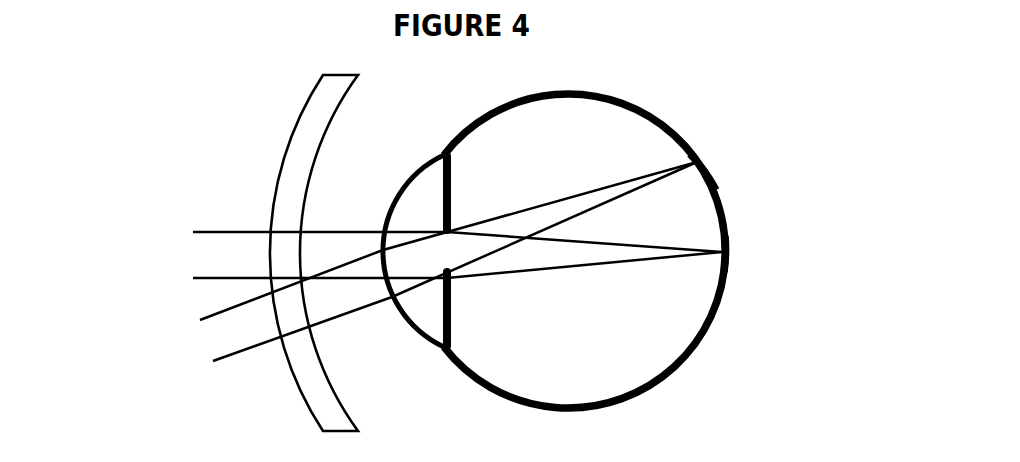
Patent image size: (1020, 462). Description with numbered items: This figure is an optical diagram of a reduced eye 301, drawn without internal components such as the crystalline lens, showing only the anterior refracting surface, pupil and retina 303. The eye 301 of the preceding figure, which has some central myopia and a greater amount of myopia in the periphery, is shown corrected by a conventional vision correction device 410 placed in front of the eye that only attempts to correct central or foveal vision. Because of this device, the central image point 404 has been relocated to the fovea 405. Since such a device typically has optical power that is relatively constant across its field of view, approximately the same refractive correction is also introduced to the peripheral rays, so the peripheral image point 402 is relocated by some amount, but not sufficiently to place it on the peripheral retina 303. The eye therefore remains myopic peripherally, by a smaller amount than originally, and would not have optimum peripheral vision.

The eye 301 is at (662, 118).
The retina 303 is at (713, 168).
The peripheral image point 402 is at (640, 177).
The central image point 404 is at (712, 259).
The fovea 405 is at (732, 256).
The conventional vision correction device 410 is at (312, 138).